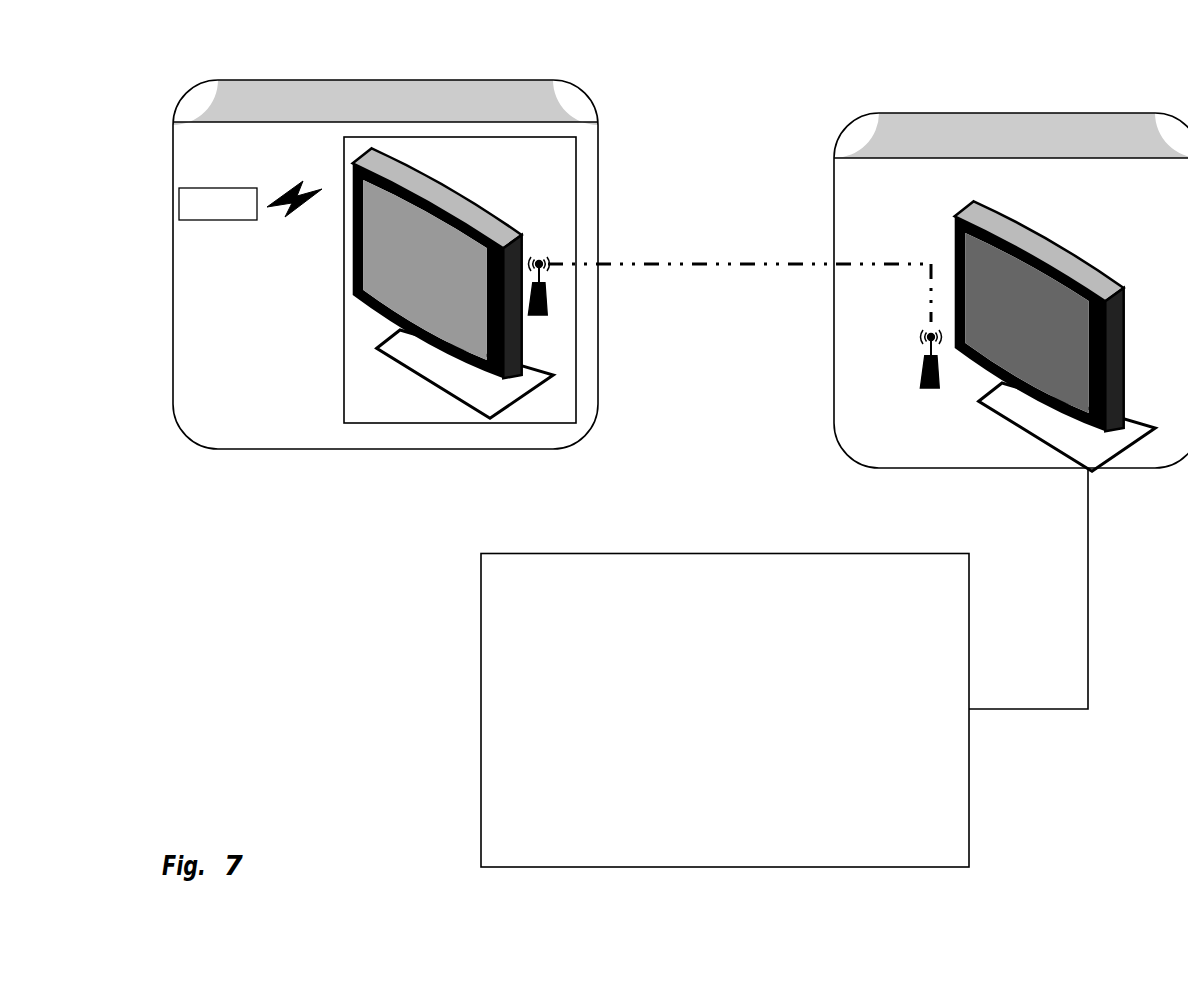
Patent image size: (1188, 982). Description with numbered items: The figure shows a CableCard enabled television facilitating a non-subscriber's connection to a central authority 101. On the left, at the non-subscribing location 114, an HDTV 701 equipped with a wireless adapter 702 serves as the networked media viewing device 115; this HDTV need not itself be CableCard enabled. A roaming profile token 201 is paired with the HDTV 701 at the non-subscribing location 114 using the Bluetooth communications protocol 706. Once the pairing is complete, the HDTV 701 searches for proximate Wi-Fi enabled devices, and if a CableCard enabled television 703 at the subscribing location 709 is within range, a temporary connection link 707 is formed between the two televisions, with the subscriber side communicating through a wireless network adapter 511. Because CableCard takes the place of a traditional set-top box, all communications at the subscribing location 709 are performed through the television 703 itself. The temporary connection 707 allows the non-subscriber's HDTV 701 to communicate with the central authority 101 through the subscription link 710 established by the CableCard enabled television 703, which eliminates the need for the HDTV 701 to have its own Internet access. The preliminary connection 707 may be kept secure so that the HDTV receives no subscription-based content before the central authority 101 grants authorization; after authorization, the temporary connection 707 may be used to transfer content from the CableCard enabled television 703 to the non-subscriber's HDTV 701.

The non-subscribing location 114 is at (418, 79).
The roaming profile token 201 is at (213, 222).
The Bluetooth communications protocol 706 is at (300, 185).
The networked media viewing device 115 is at (344, 350).
The HDTV 701 is at (484, 203).
The wireless adapter 702 is at (546, 291).
The temporary connection link 707 is at (727, 263).
The subscribing location 709 is at (998, 113).
The CableCard enabled television 703 is at (1082, 254).
The wireless network adapter 511 is at (924, 357).
The central authority 101 is at (738, 553).
The subscription link 710 is at (1088, 572).